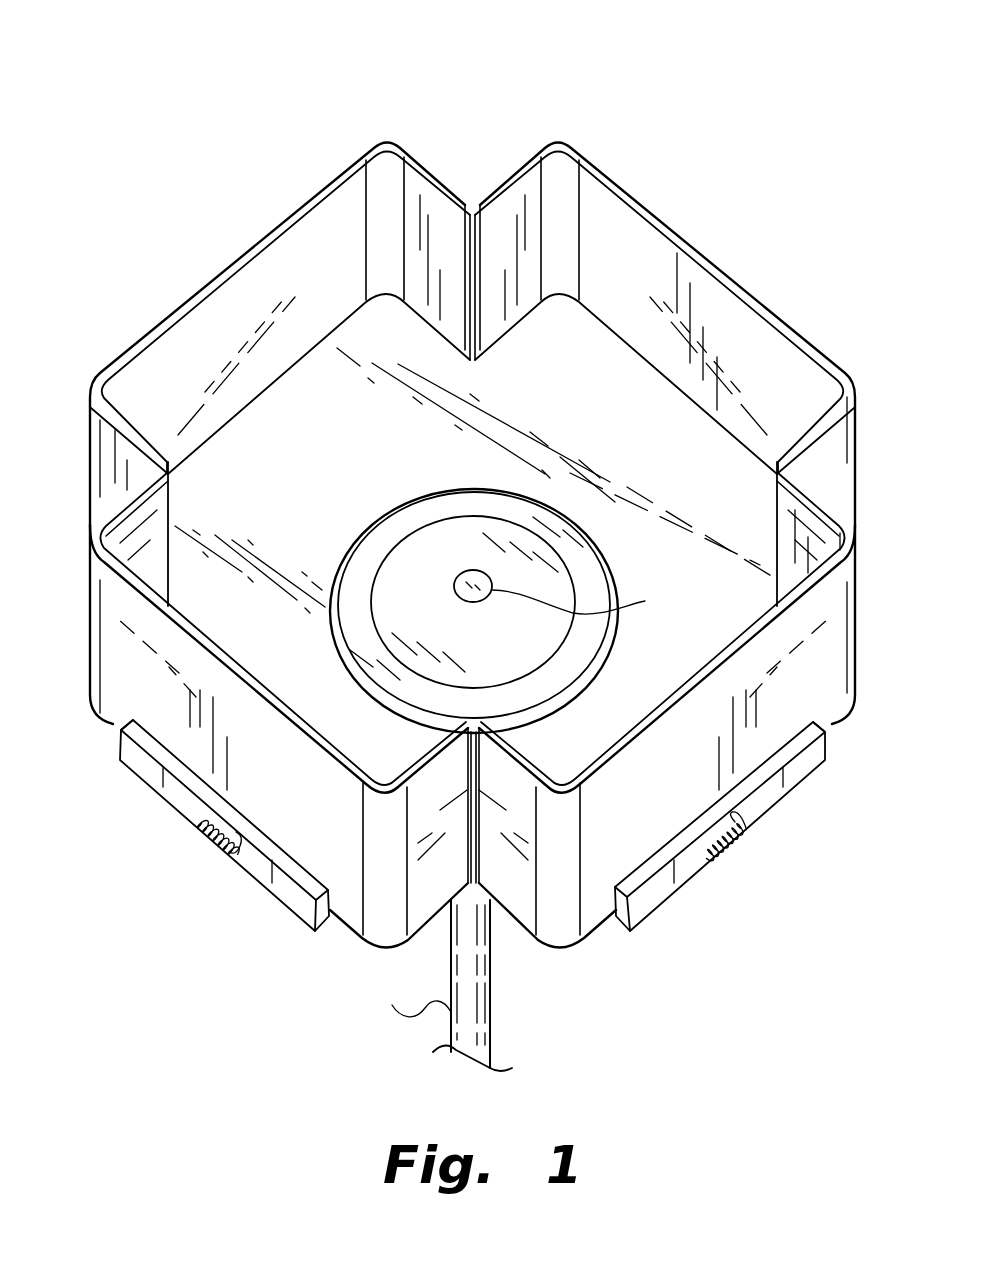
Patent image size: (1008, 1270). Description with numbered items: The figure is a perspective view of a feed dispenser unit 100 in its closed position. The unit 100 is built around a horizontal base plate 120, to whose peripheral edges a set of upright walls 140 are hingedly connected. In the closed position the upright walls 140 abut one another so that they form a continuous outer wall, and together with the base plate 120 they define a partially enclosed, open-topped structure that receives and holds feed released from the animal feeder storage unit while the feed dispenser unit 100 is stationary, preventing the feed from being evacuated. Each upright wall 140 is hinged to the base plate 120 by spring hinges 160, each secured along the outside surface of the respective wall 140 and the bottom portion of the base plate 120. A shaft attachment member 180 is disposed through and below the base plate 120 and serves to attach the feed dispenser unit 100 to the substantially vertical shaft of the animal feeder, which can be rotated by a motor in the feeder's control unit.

The feed dispenser unit 100 is at (96, 70).
The horizontal base plate 120 is at (647, 426).
The upright walls 140 is at (206, 382).
The spring hinges 160 is at (150, 790).
The shaft attachment member 180 is at (350, 545).